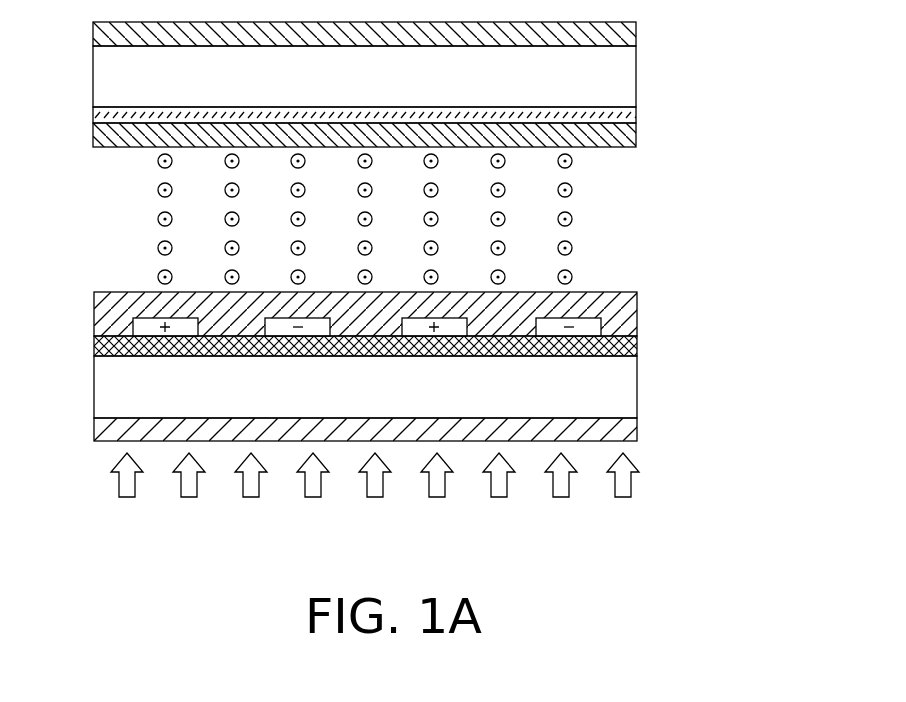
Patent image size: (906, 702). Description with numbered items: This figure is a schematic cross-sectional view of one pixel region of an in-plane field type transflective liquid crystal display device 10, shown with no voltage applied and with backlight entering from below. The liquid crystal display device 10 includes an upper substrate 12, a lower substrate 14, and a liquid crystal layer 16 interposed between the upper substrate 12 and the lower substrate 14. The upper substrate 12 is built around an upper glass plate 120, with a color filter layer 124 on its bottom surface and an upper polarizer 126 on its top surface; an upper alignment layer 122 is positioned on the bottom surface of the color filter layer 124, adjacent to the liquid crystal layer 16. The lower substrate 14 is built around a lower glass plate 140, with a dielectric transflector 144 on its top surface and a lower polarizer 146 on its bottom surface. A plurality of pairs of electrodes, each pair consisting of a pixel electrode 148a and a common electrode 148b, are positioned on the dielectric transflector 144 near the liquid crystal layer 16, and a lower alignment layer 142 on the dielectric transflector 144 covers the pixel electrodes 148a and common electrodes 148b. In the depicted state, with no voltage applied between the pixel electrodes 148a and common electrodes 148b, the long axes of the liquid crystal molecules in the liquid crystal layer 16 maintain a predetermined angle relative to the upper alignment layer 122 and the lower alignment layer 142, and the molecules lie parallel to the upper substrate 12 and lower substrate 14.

The liquid crystal display device 10 is at (407, 275).
The upper substrate 12 is at (430, 83).
The lower substrate 14 is at (437, 407).
The liquid crystal layer 16 is at (572, 219).
The upper glass plate 120 is at (612, 75).
The upper alignment layer 122 is at (406, 135).
The color filter layer 124 is at (630, 110).
The upper polarizer 126 is at (610, 37).
The lower glass plate 140 is at (618, 385).
The lower alignment layer 142 is at (625, 305).
The dielectric transflector 144 is at (617, 345).
The lower polarizer 146 is at (411, 428).
The pixel electrode 148a is at (152, 329).
The common electrode 148b is at (280, 329).